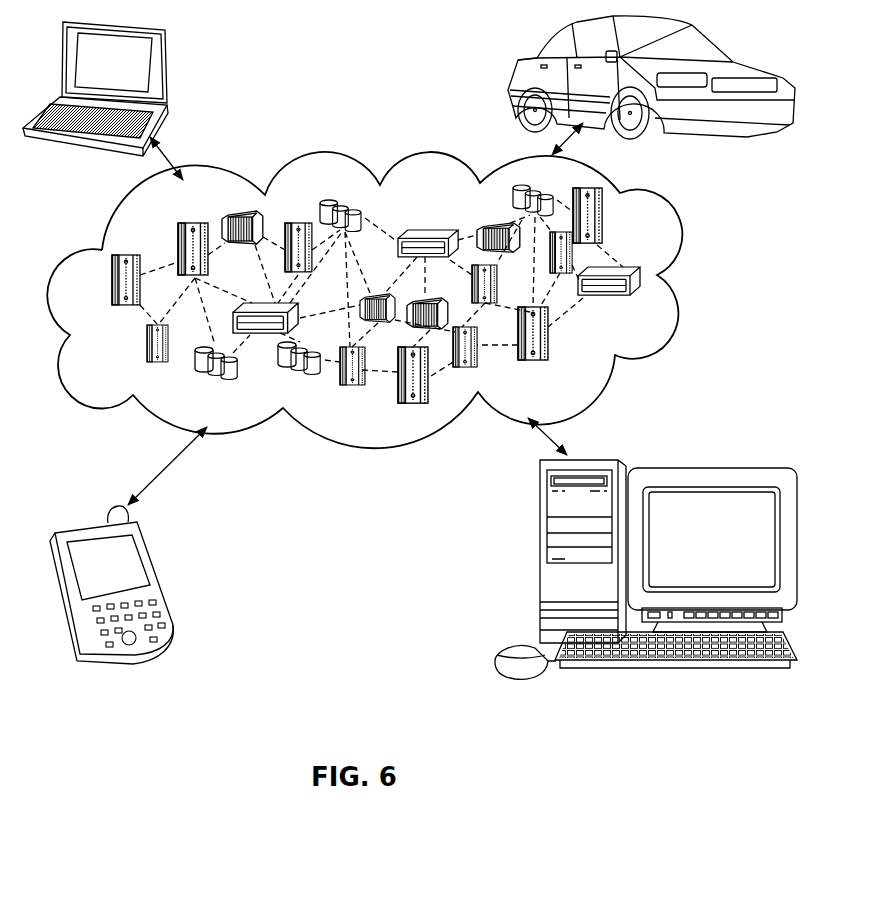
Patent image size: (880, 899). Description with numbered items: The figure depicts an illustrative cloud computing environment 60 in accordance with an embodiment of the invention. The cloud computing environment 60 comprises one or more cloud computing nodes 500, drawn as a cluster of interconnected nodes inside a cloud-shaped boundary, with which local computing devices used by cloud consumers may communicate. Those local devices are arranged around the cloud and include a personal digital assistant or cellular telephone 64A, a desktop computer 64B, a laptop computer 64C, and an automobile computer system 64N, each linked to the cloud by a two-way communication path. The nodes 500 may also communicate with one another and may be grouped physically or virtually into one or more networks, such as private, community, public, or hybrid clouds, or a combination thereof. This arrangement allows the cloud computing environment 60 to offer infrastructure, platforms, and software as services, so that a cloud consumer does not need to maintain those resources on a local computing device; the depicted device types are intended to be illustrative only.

The cloud computing environment 60 is at (692, 247).
The cloud computing nodes 500 is at (421, 300).
The personal digital assistant or cellular telephone 64A is at (157, 578).
The desktop computer 64B is at (540, 560).
The laptop computer 64C is at (168, 67).
The automobile computer system 64N is at (518, 72).